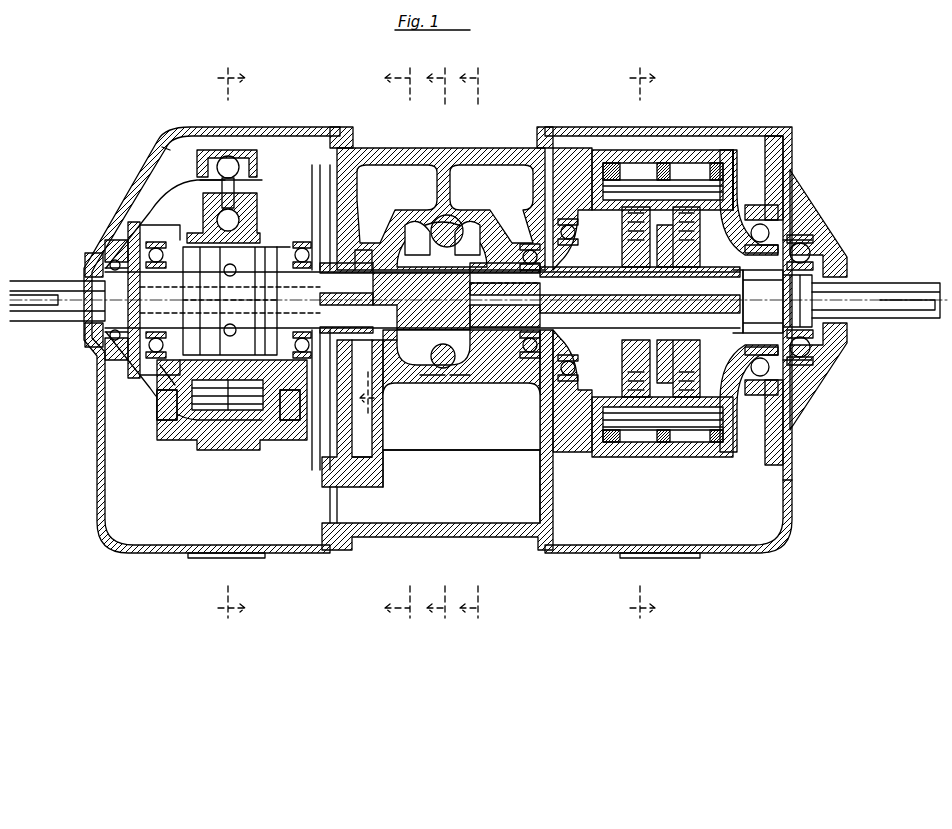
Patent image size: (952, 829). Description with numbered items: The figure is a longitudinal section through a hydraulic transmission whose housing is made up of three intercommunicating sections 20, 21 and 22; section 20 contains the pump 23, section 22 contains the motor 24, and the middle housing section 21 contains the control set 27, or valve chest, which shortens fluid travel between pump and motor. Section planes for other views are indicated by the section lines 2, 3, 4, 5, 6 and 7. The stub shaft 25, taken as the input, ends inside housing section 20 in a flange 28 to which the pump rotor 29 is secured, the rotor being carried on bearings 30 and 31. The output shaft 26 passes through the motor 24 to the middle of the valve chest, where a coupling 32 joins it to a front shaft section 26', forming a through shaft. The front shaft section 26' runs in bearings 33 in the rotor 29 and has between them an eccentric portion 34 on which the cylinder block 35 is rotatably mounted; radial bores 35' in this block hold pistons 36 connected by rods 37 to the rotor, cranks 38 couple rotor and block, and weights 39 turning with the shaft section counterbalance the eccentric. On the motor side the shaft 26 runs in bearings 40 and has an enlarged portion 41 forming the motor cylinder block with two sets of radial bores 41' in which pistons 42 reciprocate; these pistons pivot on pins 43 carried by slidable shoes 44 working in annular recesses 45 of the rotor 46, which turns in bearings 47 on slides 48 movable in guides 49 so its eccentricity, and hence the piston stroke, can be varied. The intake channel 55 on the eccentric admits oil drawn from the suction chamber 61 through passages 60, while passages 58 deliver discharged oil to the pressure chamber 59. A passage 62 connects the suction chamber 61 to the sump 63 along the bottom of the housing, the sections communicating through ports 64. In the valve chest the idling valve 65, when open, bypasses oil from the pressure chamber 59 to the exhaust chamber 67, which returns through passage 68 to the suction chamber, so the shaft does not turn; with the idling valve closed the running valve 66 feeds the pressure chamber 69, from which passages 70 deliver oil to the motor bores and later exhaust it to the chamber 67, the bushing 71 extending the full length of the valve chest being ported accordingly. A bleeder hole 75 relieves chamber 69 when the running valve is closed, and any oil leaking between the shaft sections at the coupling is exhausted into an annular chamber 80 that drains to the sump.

The section line 2- 2 is at (231, 345).
The section line 3- 3 is at (644, 345).
The section line 4- 4 is at (397, 347).
The section line 5- 5 is at (436, 347).
The section line 6- 6 is at (469, 347).
The section line 7- 7 is at (366, 307).
The housing section 20 is at (134, 530).
The middle housing section 21 is at (494, 530).
The housing section 22 is at (742, 540).
The pump 23 is at (226, 461).
The motor 24 is at (641, 469).
The stub shaft 25 is at (40, 284).
The shaft 26 is at (876, 324).
The front shaft section 26' is at (283, 248).
The control set 27 is at (440, 393).
The flange 28 is at (143, 373).
The pump rotor 29 is at (152, 208).
The bearing 30 is at (138, 280).
The bearing 31 is at (392, 250).
The coupling 32 is at (412, 307).
The bearings 33 is at (307, 222).
The eccentric portion 34 is at (207, 257).
The cylinder block 35 is at (175, 150).
The radial bores 35' is at (184, 282).
The pistons 36 is at (250, 226).
The rods 37 is at (242, 182).
The cranks 38 is at (182, 427).
The weights 39 is at (310, 417).
The bearings 40 is at (530, 252).
The enlarged portion 41 is at (737, 378).
The radial bores 41' is at (770, 284).
The pistons 42 is at (687, 255).
The pins 43 is at (678, 190).
The slidable shoes 44 is at (603, 172).
The annular recesses 45 is at (722, 217).
The rotor 46 is at (732, 152).
The bearings 47 is at (509, 365).
The slides 48 is at (785, 402).
The guides 49 is at (770, 412).
The channel 55 is at (156, 392).
The passages 58 is at (325, 320).
The pressure chamber 59 is at (408, 250).
The passages 60 is at (325, 291).
The suction chamber 61 is at (392, 245).
The passage 62 is at (365, 480).
The sump 63 is at (460, 512).
The ports 64 is at (340, 503).
The idling valve 65 is at (463, 250).
The running valve 66 is at (454, 372).
The exhaust chamber 67 is at (480, 258).
The passage 68 is at (490, 310).
The pressure chamber 69 is at (493, 395).
The passages 70 is at (568, 290).
The bushing 71 is at (383, 372).
The bleeder hole 75 is at (440, 375).
The annular chamber 80 is at (447, 345).